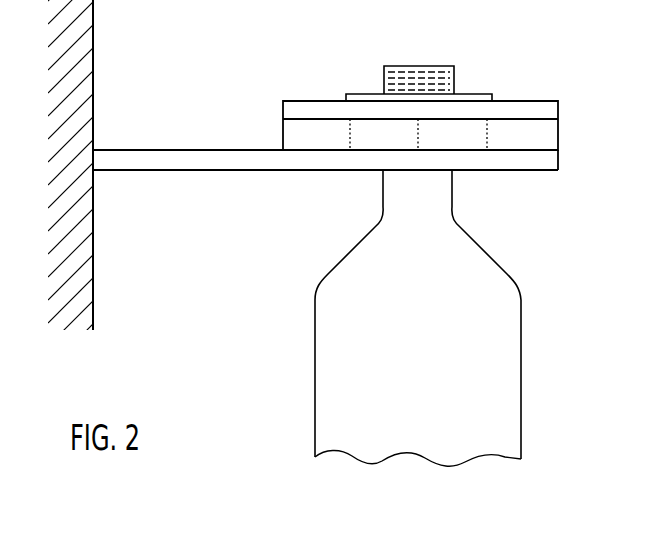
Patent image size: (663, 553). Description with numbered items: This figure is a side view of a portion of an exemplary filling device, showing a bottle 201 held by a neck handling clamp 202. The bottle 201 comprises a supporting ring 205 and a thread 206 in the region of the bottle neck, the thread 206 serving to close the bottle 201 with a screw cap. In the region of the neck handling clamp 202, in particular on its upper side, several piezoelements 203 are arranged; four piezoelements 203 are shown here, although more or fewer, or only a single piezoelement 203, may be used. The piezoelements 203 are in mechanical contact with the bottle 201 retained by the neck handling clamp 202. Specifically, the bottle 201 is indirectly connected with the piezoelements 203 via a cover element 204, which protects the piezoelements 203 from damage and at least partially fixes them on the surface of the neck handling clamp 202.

The bottle 201 is at (523, 316).
The neck handling clamp 202 is at (178, 146).
The piezoelements 203 is at (331, 147).
The cover element 204 is at (559, 106).
The supporting ring 205 is at (474, 94).
The thread 206 is at (384, 84).